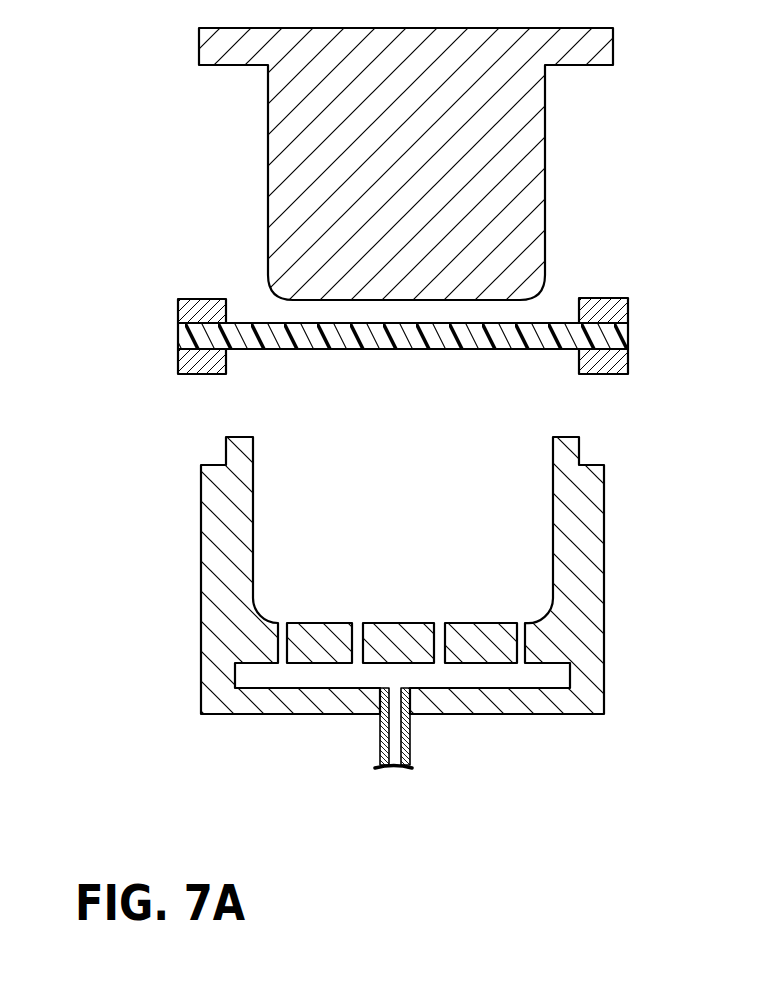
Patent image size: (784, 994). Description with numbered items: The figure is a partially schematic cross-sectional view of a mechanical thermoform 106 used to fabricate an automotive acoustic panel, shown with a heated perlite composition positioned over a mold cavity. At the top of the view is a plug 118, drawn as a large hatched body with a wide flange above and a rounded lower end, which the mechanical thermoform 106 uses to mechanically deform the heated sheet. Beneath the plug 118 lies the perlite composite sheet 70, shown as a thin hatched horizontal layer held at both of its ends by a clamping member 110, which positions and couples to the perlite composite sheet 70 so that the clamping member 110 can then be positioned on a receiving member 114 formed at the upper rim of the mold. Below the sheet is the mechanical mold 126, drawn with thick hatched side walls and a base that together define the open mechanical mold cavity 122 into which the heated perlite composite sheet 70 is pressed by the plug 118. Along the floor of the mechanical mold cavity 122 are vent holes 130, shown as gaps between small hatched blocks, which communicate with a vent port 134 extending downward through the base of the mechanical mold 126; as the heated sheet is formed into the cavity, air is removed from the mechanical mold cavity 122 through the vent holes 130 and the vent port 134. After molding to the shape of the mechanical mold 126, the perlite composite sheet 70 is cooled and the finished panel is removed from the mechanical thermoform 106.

The mechanical thermoform 106 is at (206, 172).
The plug 118 is at (490, 163).
The perlite composite sheet 70 is at (551, 325).
The clamping member 110 is at (180, 363).
The mechanical mold cavity 122 is at (410, 524).
The receiving member 114 is at (213, 463).
The mechanical mold 126 is at (226, 583).
The vent holes 130 is at (445, 618).
The vent port 134 is at (402, 773).